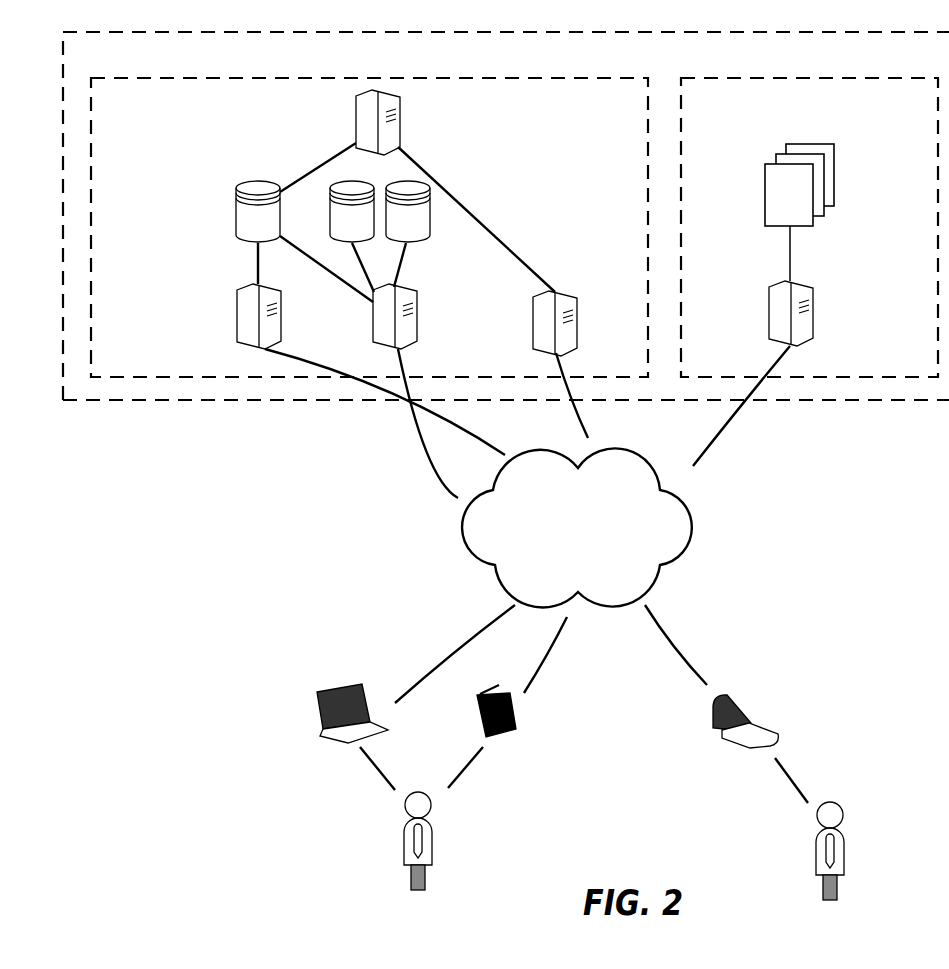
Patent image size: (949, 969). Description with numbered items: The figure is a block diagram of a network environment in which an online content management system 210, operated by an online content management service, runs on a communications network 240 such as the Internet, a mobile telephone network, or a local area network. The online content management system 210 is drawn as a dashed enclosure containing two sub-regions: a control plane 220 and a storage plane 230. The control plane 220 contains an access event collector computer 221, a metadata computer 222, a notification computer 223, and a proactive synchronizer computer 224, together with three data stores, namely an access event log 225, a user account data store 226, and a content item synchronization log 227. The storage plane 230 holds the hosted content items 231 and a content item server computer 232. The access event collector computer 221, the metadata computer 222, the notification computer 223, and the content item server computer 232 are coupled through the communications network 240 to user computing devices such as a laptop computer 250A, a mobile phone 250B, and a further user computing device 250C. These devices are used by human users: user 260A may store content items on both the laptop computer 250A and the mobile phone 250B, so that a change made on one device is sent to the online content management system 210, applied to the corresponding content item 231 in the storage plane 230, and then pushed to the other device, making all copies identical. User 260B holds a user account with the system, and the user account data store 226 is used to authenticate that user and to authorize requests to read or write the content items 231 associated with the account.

The online content management system 210 is at (506, 216).
The control plane 220 is at (369, 227).
The storage plane 230 is at (809, 227).
The access event collector computer 221 is at (237, 310).
The metadata computer 222 is at (373, 318).
The notification computer 223 is at (533, 322).
The proactive synchronizer computer 224 is at (357, 118).
The access event log 225 is at (236, 212).
The user account data store 226 is at (352, 211).
The content item synchronization log 227 is at (408, 211).
The hosted content items 231 is at (813, 193).
The content item server computer 232 is at (769, 312).
The communications network 240 is at (577, 527).
The laptop computer 250A is at (318, 731).
The mobile phone 250B is at (516, 730).
The user computing device 250C is at (726, 735).
The user 260A is at (434, 840).
The user 260B is at (846, 852).